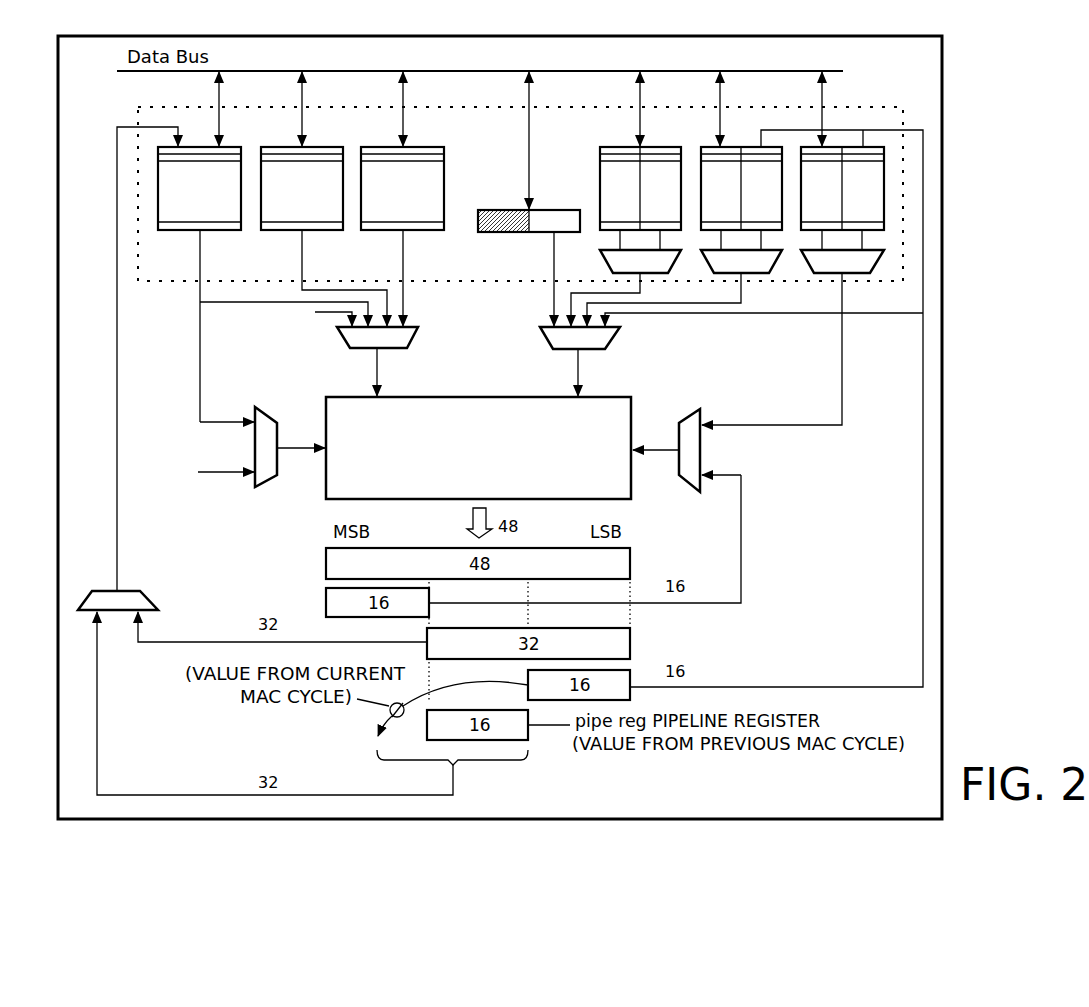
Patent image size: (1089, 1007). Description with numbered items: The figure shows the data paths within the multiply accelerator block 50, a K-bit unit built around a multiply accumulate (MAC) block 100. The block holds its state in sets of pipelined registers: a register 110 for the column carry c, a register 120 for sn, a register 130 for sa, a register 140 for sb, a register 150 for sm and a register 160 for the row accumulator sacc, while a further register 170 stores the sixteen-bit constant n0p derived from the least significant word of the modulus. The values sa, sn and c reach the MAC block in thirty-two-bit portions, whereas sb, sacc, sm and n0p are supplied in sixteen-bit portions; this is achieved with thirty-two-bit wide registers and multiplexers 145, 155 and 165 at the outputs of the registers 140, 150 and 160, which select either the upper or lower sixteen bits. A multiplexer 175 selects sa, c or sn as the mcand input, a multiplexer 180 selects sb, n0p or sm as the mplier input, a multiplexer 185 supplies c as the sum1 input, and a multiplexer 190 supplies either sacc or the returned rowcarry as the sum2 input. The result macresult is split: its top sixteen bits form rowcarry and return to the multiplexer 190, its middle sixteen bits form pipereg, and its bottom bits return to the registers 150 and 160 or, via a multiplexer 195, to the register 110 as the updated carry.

The multiply accelerator block 50 is at (944, 78).
The multiply accumulate (MAC) block 100 is at (494, 395).
The pipelined register for c 110 is at (230, 146).
The pipelined register for sn 120 is at (313, 146).
The pipelined register for sa 130 is at (415, 146).
The pipelined register for sb 140 is at (652, 146).
The multiplexer at output of sb register 145 is at (660, 274).
The pipelined register for sm 150 is at (736, 146).
The multiplexer at output of sm register 155 is at (762, 274).
The pipelined register for sacc 160 is at (836, 146).
The multiplexer at output of sacc register 165 is at (862, 274).
The register for constant n0p 170 is at (503, 232).
The mcand multiplexer 175 is at (340, 340).
The mplier multiplexer 180 is at (618, 342).
The sum1 multiplexer 185 is at (256, 407).
The sum2 multiplexer 190 is at (699, 409).
The feedback multiplexer 195 is at (146, 368).